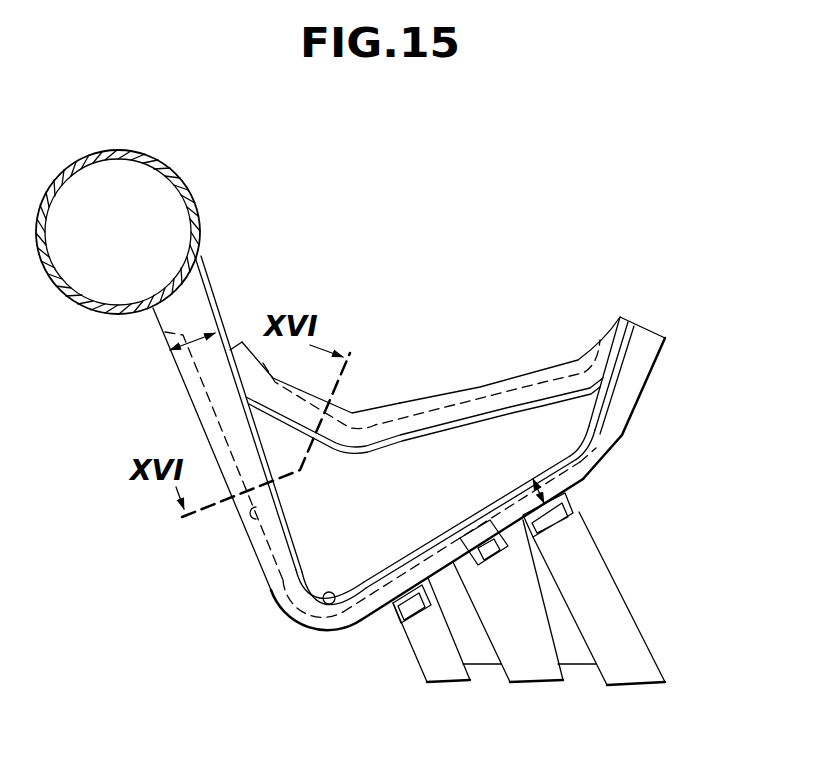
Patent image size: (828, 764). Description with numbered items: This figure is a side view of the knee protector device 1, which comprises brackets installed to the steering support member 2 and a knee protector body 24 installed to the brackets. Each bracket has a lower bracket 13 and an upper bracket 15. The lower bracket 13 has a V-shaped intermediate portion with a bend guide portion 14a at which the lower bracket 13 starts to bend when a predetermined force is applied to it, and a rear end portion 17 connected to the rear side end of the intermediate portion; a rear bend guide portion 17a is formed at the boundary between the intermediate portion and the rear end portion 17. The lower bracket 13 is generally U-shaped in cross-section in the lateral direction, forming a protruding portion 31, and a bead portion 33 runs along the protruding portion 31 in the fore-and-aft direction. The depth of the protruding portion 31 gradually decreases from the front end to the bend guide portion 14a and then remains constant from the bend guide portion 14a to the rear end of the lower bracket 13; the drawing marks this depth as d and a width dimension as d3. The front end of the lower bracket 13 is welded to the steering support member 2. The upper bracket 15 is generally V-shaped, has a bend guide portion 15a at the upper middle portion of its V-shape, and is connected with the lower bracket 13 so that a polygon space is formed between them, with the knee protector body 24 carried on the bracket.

The knee protector device 1 is at (518, 226).
The steering support member 2 is at (110, 147).
The lower bracket 13 is at (254, 556).
The bend guide portion 14a is at (333, 607).
The upper bracket 15 is at (467, 386).
The bend guide portion 15a is at (358, 414).
The rear end portion 17 is at (643, 355).
The rear bend guide portion 17a is at (623, 433).
The knee protector body 24 is at (616, 585).
The protruding portion 31 is at (197, 412).
The bead portion 33 is at (262, 511).
The wall thickness d is at (569, 488).
The arm width dimension d3 is at (195, 345).